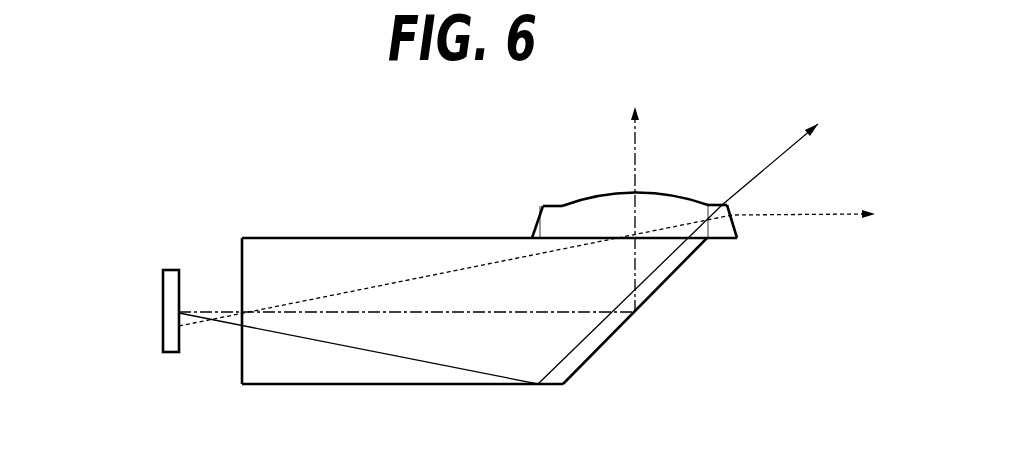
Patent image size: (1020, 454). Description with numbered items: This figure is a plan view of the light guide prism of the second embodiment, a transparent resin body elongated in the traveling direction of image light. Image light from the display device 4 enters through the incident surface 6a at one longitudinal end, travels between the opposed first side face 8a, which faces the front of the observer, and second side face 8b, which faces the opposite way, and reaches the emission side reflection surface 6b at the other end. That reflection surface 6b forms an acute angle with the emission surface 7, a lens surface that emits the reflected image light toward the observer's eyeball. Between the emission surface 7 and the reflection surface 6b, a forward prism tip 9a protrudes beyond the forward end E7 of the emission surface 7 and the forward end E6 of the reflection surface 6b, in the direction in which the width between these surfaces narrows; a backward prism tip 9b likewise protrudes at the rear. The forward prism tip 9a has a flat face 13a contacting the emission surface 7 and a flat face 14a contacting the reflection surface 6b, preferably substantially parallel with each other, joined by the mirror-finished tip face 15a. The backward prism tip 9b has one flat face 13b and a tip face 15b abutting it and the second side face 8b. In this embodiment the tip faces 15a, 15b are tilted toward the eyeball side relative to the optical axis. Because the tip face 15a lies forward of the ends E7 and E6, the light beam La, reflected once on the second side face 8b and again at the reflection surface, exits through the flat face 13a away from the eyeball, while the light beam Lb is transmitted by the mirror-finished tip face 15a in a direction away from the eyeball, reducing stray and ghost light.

The display device 4 is at (163, 298).
The incident surface 6a is at (242, 352).
The emission side reflection surface 6b is at (602, 344).
The emission surface 7 is at (604, 195).
The first side face 8a is at (349, 238).
The second side face 8b is at (399, 385).
The prism tip 9a is at (740, 233).
The prism tip 9b is at (545, 215).
The flat face 13a is at (722, 203).
The flat face 13b is at (545, 206).
The flat face 14a is at (727, 241).
The tip face 15a is at (733, 220).
The tip face 15b is at (533, 227).
The forward end of the reflection surface E6 is at (708, 239).
The forward end of the emission surface E7 is at (708, 204).
The light beam La is at (428, 362).
The light beam Lb is at (448, 273).